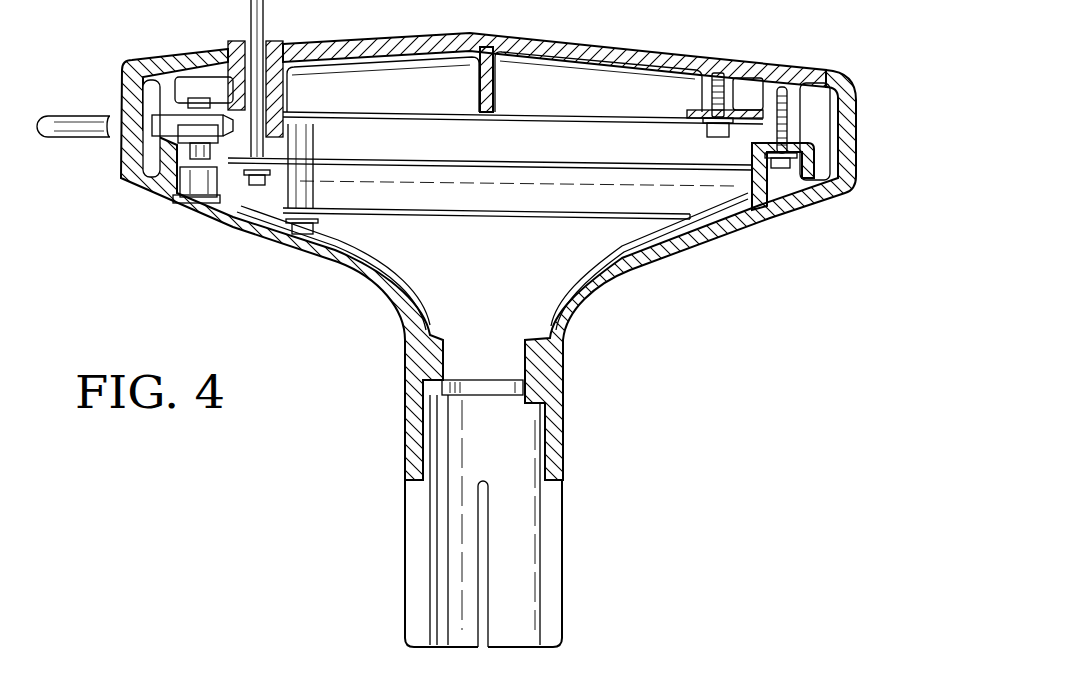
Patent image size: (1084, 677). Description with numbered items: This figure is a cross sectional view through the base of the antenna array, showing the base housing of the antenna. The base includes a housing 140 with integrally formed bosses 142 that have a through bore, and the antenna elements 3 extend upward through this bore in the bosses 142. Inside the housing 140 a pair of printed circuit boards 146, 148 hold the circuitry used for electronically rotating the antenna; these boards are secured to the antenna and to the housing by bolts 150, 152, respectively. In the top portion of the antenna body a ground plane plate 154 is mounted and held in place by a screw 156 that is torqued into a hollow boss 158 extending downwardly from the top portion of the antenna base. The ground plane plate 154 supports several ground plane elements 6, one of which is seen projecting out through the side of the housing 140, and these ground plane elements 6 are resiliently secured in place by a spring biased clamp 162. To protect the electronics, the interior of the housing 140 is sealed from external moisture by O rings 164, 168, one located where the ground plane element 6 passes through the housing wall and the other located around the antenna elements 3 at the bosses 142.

The antenna element 3 is at (264, 3).
The ground plane element 6 is at (69, 122).
The housing 140 is at (693, 243).
The boss 142 is at (276, 97).
The printed circuit board 146 is at (537, 160).
The printed circuit board 148 is at (537, 207).
The bolt 150 is at (257, 186).
The bolt 152 is at (316, 224).
The ground plane plate 154 is at (537, 110).
The screw 156 is at (710, 134).
The hollow boss 158 is at (712, 92).
The spring biased clamp 162 is at (182, 145).
The O ring 164 is at (180, 138).
The O ring 168 is at (240, 44).